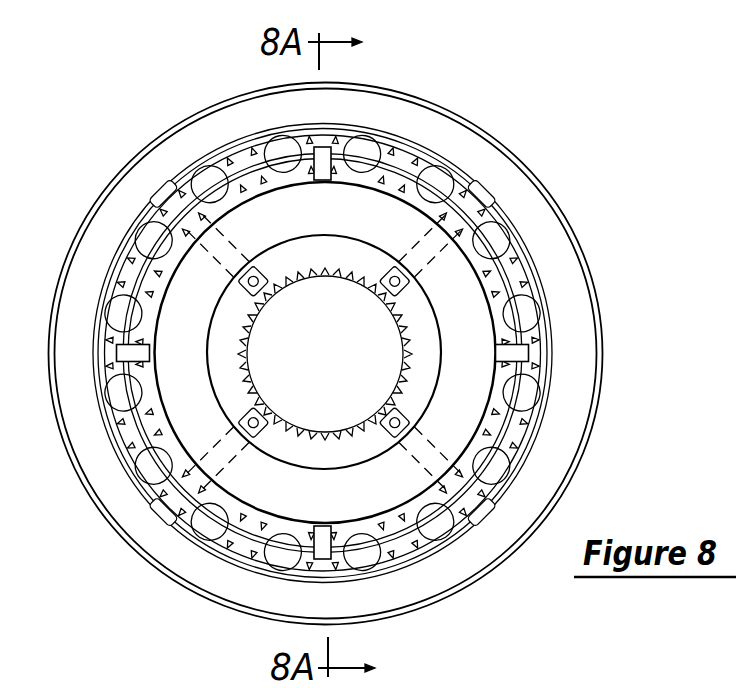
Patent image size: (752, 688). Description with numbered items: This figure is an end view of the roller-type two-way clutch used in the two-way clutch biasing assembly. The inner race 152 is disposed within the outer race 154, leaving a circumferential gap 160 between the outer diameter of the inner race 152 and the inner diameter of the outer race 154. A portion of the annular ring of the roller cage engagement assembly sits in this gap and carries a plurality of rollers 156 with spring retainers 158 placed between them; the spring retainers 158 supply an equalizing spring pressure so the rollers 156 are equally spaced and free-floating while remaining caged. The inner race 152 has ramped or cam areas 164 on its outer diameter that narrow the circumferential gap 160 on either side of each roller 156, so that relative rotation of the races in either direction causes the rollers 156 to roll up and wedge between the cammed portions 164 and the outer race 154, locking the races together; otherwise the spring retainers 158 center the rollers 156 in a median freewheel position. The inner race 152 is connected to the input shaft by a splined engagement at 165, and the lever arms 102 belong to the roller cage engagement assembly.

The lever arms 102 is at (426, 250).
The inner race 152 is at (397, 235).
The outer race 154 is at (507, 148).
The rollers 156 is at (200, 173).
The spring retainers 158 is at (233, 151).
The circumferential gap 160 is at (120, 270).
The ramped or cam areas 164 is at (290, 160).
The splined engagement 165 is at (378, 291).